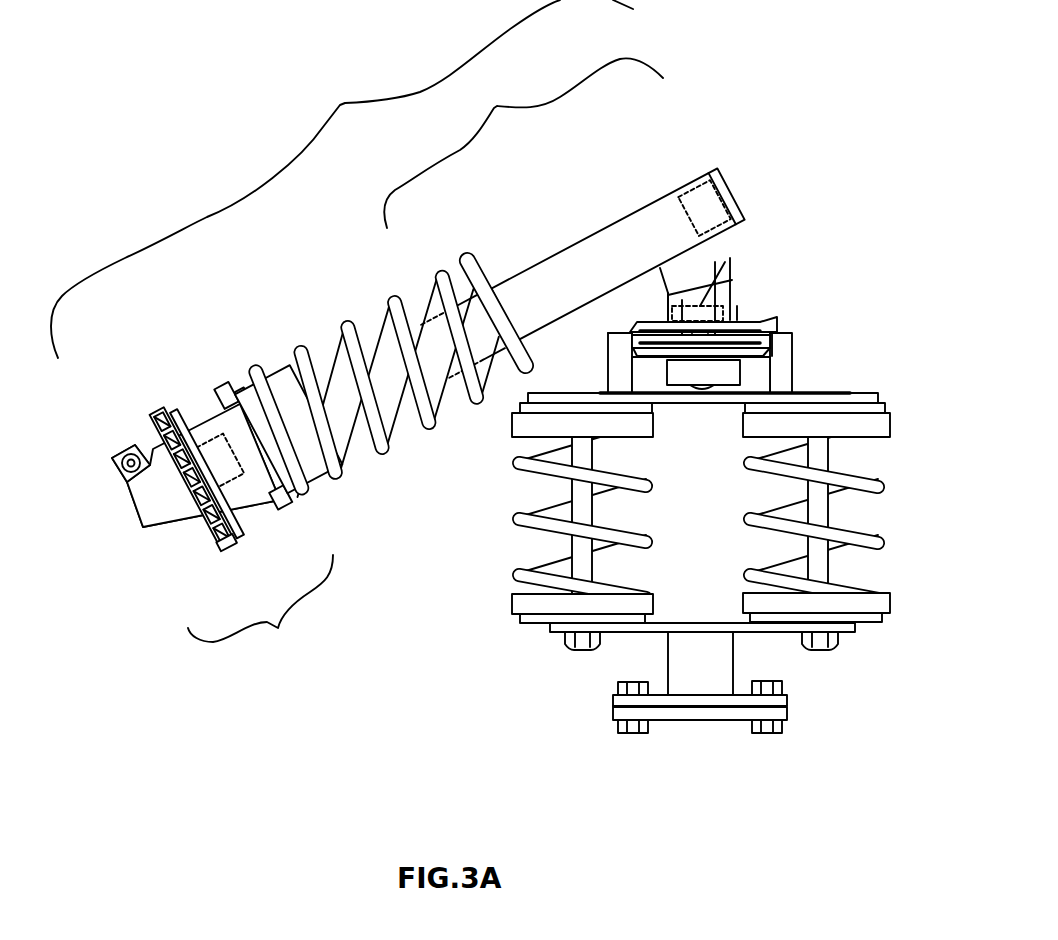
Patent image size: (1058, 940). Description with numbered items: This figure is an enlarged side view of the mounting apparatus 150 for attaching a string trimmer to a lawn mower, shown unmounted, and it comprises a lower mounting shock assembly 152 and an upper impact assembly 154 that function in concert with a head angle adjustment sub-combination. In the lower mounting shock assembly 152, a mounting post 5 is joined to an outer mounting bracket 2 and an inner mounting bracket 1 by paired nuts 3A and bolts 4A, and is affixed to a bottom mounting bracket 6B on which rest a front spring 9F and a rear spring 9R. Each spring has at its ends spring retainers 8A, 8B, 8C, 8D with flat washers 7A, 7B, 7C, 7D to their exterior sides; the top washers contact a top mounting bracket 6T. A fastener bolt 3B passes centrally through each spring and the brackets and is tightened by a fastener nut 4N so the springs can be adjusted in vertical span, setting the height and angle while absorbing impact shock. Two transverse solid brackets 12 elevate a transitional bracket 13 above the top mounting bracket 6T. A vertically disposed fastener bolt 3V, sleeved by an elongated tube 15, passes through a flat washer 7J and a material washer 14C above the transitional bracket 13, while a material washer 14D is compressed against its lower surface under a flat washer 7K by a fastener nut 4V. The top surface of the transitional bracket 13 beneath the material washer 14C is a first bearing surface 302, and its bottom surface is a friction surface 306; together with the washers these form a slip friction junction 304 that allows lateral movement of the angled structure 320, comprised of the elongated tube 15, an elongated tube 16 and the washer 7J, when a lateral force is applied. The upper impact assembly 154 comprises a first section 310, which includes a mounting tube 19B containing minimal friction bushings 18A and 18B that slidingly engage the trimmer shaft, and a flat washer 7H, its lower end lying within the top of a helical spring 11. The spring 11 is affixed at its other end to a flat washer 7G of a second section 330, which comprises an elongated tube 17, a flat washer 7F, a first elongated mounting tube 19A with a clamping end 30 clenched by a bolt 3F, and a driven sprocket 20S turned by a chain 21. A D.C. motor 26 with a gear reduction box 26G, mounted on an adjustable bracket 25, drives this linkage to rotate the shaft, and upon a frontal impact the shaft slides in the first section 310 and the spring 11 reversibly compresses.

The inner mounting bracket 1 is at (612, 714).
The outer mounting bracket 2 is at (612, 697).
The nut 3A is at (630, 685).
The fastener bolt 3B is at (692, 518).
The bolt 3F is at (140, 426).
The fastener bolt 3V is at (720, 263).
The bolt 4A is at (702, 741).
The fastener nut 4N is at (602, 646).
The fastener nut 4V is at (672, 382).
The mounting post 5 is at (668, 669).
The bottom mounting bracket 6B is at (678, 626).
The top mounting bracket 6T is at (689, 397).
The flat washer 7A is at (567, 413).
The flat washer 7B is at (582, 645).
The flat washer 7C is at (863, 404).
The flat washer 7D is at (816, 642).
The flat washer 7F is at (207, 437).
The flat washer 7G is at (253, 404).
The flat washer 7H is at (496, 294).
The flat washer 7J is at (756, 308).
The flat washer 7K is at (747, 358).
The spring retainer 8A is at (512, 437).
The spring retainer 8B is at (564, 650).
The spring retainer 8C is at (886, 413).
The spring retainer 8D is at (817, 648).
The front spring 9F is at (556, 532).
The rear spring 9R is at (791, 532).
The helical spring 11 is at (378, 373).
The transverse solid bracket 12 is at (779, 344).
The transitional bracket 13 is at (606, 340).
The material washer 14C is at (775, 318).
The material washer 14D is at (768, 352).
The elongated tube 15 is at (720, 283).
The elongated tube 16 is at (712, 277).
The elongated tube 17 is at (217, 478).
The minimal friction bushing 18A is at (422, 313).
The minimal friction bushing 18B is at (662, 176).
The first elongated mounting tube 19A is at (260, 505).
The elongated mounting tube 19B is at (617, 241).
The driven sprocket 20S is at (190, 495).
The chain 21 is at (213, 572).
The adjustable bracket 25 is at (216, 324).
The D.C. motor 26 is at (288, 372).
The gear reduction box 26G is at (280, 405).
The clamping end 30 is at (196, 475).
The mounting apparatus 150 is at (428, 369).
The lower mounting shock assembly 152 is at (687, 498).
The upper impact assembly 154 is at (464, 240).
The first bearing surface 302 is at (626, 328).
The slip friction junction 304 is at (846, 300).
The friction surface 306 is at (626, 347).
The first section 310 is at (523, 143).
The angled structure 320 is at (662, 277).
The second section 330 is at (260, 607).